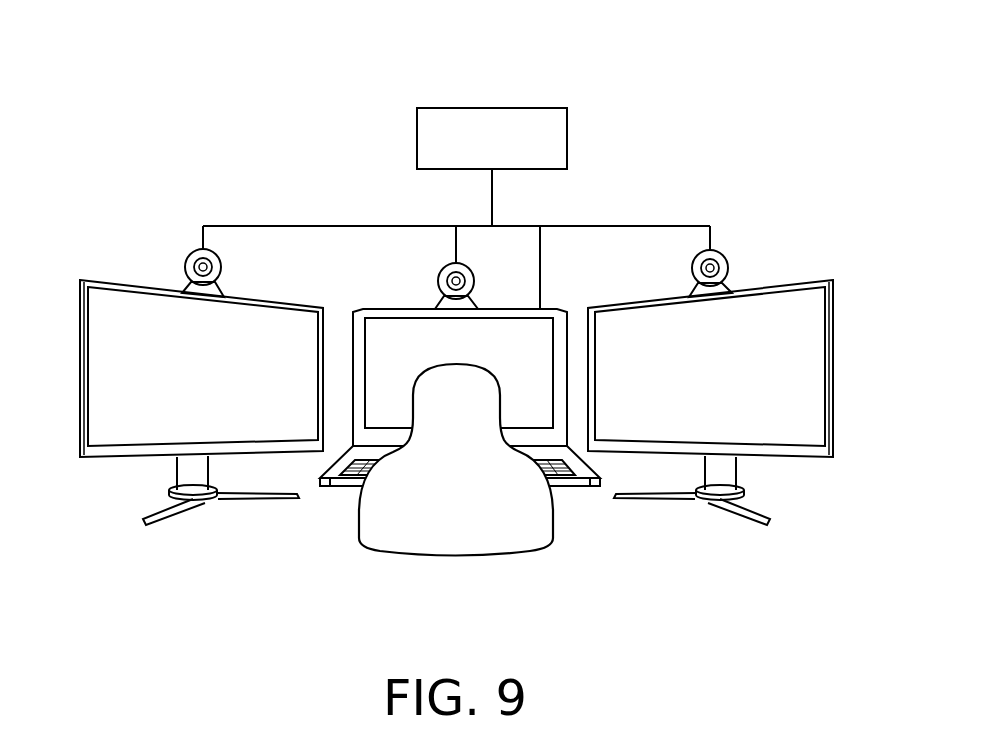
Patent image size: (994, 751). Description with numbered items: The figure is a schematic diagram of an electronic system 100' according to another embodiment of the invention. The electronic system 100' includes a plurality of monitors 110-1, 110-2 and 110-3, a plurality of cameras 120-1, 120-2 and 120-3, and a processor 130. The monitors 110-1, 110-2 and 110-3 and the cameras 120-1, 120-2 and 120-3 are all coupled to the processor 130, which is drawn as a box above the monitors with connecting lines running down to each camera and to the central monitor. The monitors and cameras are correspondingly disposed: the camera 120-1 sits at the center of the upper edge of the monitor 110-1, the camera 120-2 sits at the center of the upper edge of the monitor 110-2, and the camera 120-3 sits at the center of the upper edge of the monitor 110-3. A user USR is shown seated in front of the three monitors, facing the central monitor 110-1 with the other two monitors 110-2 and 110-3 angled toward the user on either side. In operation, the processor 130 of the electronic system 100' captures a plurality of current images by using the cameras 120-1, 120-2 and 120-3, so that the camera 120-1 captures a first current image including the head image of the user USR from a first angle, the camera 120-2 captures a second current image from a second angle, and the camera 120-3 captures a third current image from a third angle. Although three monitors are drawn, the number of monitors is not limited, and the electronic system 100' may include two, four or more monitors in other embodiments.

The electronic system 100' is at (134, 135).
The processor 130 is at (492, 108).
The monitor 110-1 is at (541, 306).
The monitor 110-2 is at (108, 458).
The monitor 110-3 is at (802, 458).
The camera 120-1 is at (440, 276).
The camera 120-2 is at (187, 262).
The camera 120-3 is at (726, 261).
The user USR is at (555, 524).